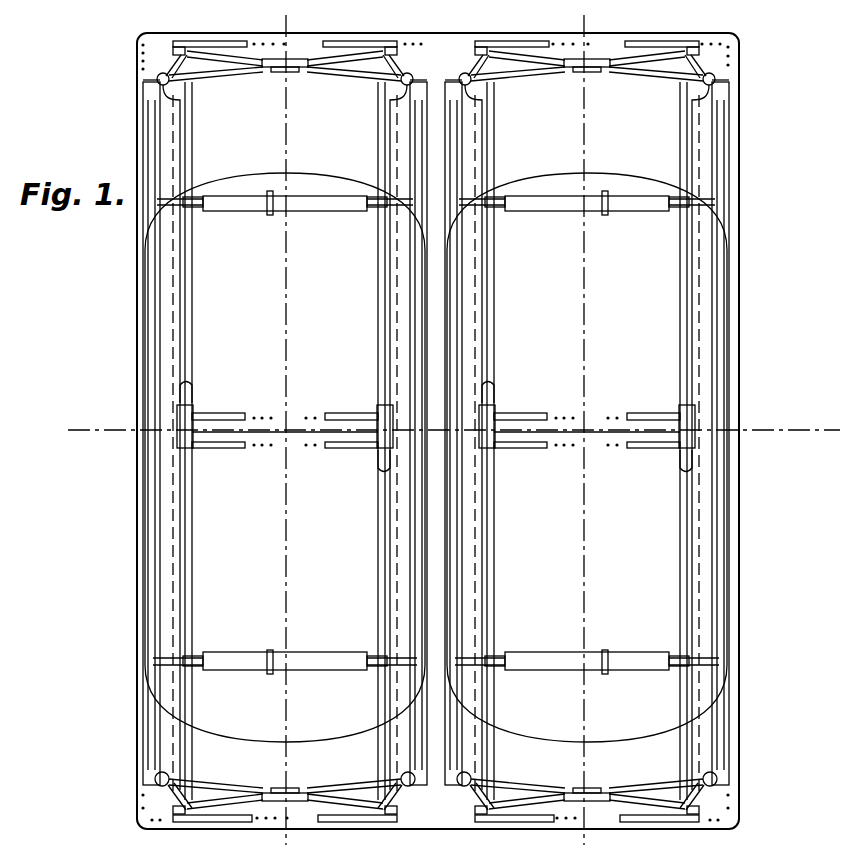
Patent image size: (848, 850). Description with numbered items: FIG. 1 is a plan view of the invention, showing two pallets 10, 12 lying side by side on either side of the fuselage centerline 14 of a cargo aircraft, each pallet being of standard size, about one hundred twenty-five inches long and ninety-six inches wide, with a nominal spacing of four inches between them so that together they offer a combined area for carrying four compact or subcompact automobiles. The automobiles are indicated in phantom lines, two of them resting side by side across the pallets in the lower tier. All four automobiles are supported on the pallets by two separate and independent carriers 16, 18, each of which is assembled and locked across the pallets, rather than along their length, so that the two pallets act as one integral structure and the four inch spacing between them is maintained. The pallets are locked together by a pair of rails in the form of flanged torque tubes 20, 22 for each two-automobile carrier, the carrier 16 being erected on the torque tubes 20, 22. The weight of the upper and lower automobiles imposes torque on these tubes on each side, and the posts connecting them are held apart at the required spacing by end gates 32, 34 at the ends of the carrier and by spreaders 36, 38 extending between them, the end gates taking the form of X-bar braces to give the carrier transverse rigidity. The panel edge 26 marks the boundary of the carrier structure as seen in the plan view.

The pallet 10 is at (739, 300).
The pallet 12 is at (739, 606).
The fuselage centerline 14 is at (792, 433).
The carrier 16 is at (720, 796).
The carrier 18 is at (144, 791).
The flanged torque tube 20 is at (680, 755).
The flanged torque tube 22 is at (490, 776).
The panel edge 26 is at (498, 556).
The end gate 32 is at (600, 814).
The end gate 34 is at (601, 50).
The spreader 36 is at (565, 652).
The spreader 38 is at (548, 210).